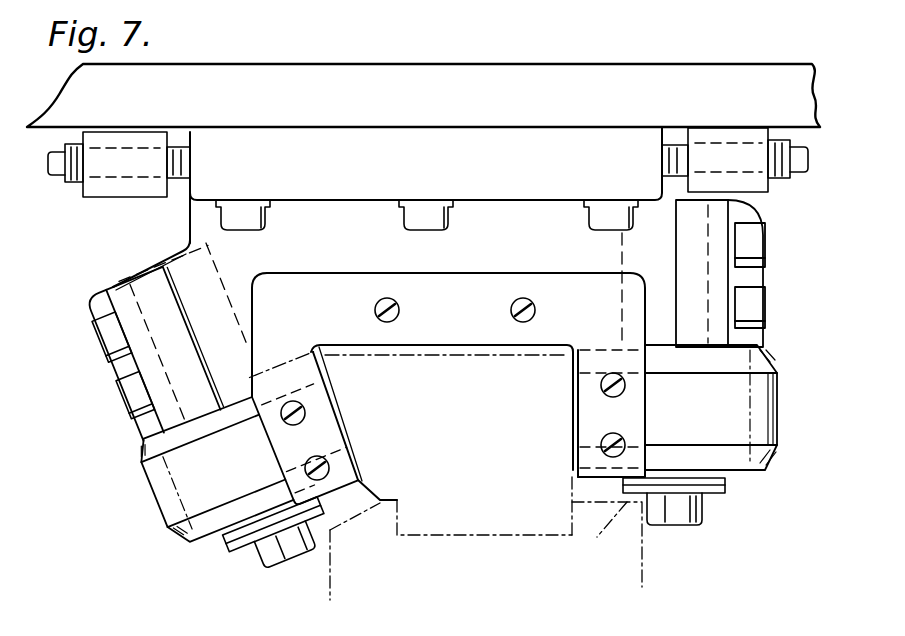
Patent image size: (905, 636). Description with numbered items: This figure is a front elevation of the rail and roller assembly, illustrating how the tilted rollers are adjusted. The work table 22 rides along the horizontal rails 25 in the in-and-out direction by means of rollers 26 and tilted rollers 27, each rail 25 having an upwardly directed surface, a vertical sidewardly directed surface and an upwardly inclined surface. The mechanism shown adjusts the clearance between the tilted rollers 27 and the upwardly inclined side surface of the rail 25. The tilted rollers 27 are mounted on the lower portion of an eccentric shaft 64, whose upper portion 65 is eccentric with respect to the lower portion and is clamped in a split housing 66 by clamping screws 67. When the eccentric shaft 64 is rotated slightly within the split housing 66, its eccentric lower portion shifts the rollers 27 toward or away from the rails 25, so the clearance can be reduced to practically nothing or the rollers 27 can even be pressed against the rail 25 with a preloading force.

The work table 22 is at (307, 64).
The horizontal rail 25 is at (482, 493).
The roller 26 is at (727, 433).
The tilted roller 27 is at (172, 497).
The eccentric shaft 64 is at (287, 545).
The upper portion of eccentric shaft 65 is at (262, 250).
The split housing 66 is at (122, 300).
The clamping screw 67 is at (113, 340).